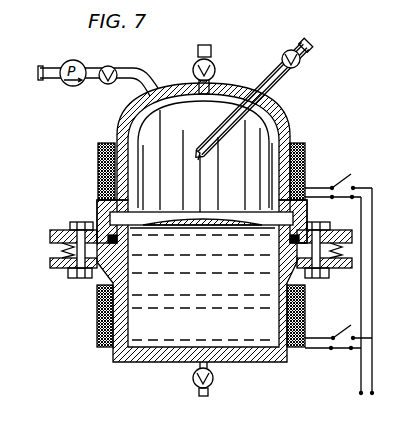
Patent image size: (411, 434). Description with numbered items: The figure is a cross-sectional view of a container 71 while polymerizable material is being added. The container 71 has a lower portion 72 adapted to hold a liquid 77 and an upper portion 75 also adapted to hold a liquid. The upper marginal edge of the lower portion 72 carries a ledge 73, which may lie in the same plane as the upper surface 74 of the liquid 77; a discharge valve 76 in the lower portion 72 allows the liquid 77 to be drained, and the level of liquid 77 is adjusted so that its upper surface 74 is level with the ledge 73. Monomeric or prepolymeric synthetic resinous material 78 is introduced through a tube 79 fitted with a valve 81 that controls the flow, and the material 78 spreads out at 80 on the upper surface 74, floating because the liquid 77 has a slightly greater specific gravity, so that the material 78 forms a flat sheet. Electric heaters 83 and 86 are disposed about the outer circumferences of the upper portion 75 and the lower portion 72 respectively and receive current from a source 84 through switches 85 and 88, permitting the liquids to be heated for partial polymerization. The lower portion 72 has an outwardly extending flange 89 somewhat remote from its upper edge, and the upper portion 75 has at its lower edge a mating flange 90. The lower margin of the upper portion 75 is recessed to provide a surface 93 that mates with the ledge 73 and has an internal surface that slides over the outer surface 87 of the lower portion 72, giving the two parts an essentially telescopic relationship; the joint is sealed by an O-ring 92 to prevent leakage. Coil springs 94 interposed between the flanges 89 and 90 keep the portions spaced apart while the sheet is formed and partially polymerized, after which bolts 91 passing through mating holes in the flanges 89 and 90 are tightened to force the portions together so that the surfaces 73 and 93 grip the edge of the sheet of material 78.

The container 71 is at (162, 233).
The lower portion 72 is at (122, 360).
The ledge 73 is at (130, 230).
The upper surface 74 is at (238, 227).
The upper portion 75 is at (125, 112).
The valve 76 is at (193, 390).
The liquid 77 is at (167, 325).
The monomeric or prepolymeric synthetic resinous material 78 is at (199, 152).
The tube 79 is at (255, 99).
The spread-out region of material 80 is at (200, 217).
The valve 81 is at (299, 62).
The electric heater 83 is at (100, 147).
The current source 84 is at (367, 395).
The switch 85 is at (338, 185).
The electric heater 86 is at (97, 323).
The outer surface 87 is at (97, 212).
The switch 88 is at (341, 350).
The flange 89 is at (52, 263).
The flange 90 is at (52, 233).
The bolt 91 is at (77, 273).
The O-ring 92 is at (108, 243).
The surface 93 is at (97, 202).
The coil spring 94 is at (58, 250).